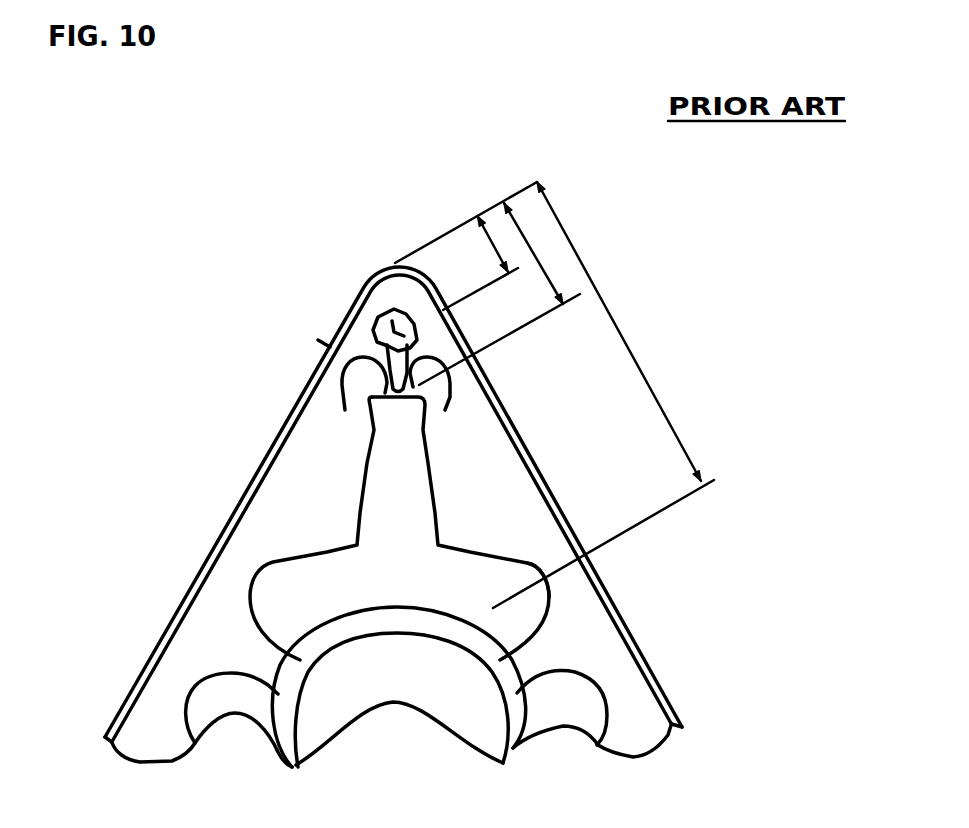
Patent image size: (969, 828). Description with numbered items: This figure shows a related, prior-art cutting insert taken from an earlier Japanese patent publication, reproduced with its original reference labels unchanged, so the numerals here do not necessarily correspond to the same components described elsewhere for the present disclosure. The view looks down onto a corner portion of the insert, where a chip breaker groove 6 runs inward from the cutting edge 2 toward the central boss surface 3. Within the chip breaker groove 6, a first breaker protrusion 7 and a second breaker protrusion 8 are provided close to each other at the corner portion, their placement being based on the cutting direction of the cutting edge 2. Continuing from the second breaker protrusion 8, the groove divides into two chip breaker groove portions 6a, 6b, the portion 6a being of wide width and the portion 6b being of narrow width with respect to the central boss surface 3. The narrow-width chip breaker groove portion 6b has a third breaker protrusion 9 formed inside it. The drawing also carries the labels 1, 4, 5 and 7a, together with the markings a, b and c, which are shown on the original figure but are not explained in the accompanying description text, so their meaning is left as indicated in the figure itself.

The prior art assembly 1 is at (252, 440).
The cutting edge 2 is at (326, 349).
The central boss surface 3 is at (317, 600).
The ring portion 4 is at (433, 653).
The neck portion 5 is at (380, 342).
The chip breaker groove 6 is at (293, 500).
The chip breaker groove portion 6a is at (468, 492).
The chip breaker groove portion 6b is at (557, 592).
The first breaker protrusion 7 is at (392, 323).
The tip of head portion 7a is at (372, 356).
The second breaker protrusion 8 is at (367, 382).
The third breaker protrusion 9 is at (528, 567).
The dimension a is at (466, 246).
The dimension b is at (499, 294).
The dimension c is at (603, 395).